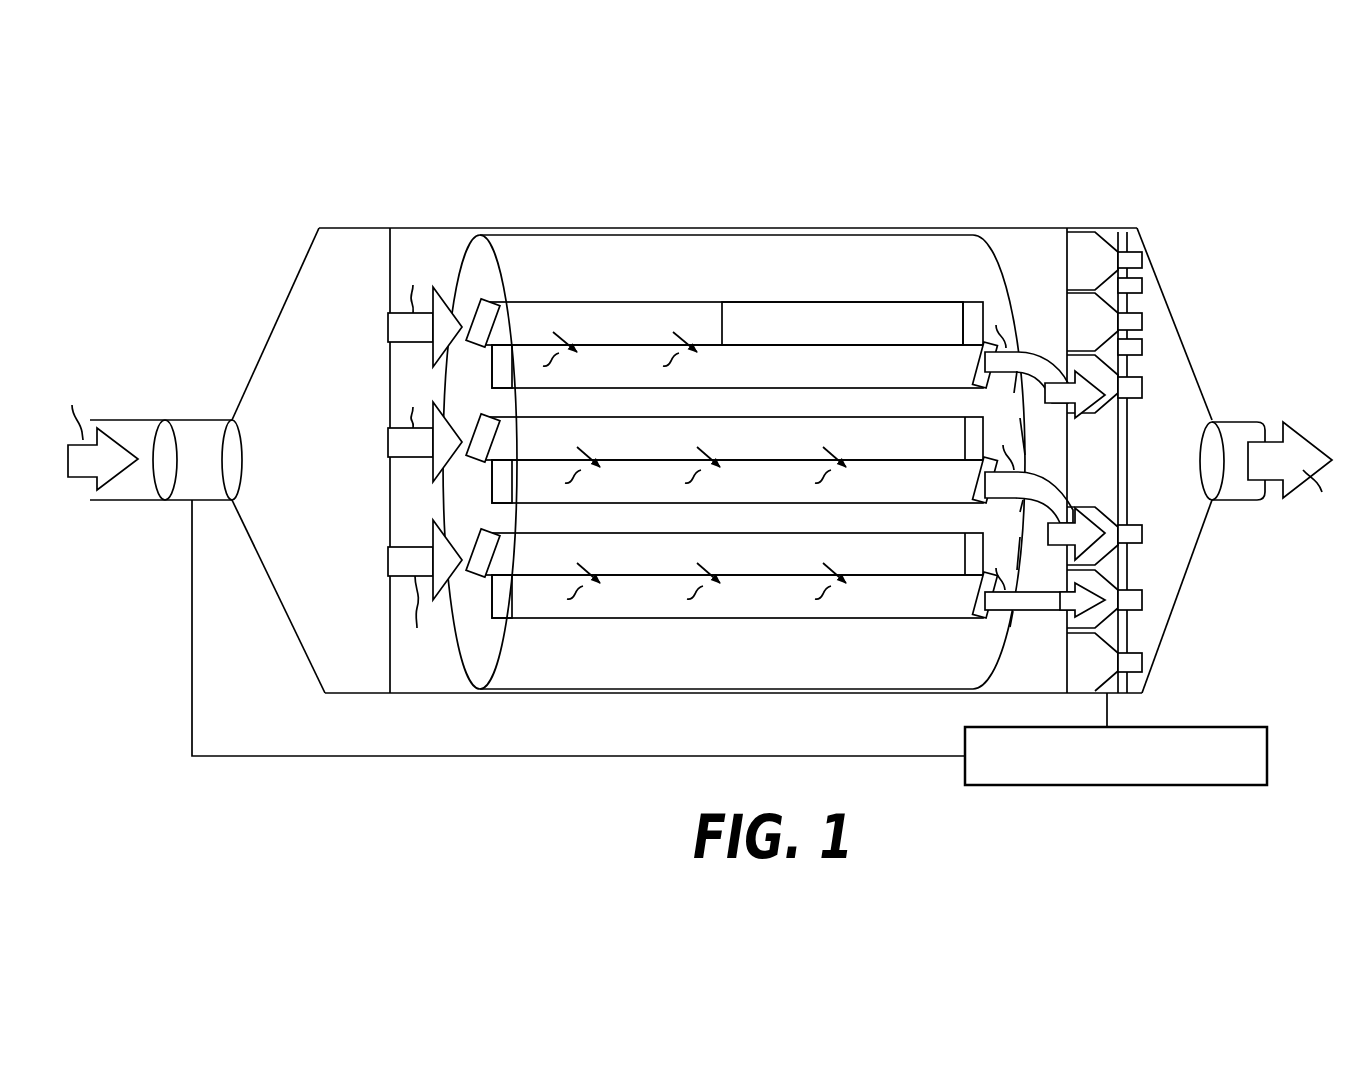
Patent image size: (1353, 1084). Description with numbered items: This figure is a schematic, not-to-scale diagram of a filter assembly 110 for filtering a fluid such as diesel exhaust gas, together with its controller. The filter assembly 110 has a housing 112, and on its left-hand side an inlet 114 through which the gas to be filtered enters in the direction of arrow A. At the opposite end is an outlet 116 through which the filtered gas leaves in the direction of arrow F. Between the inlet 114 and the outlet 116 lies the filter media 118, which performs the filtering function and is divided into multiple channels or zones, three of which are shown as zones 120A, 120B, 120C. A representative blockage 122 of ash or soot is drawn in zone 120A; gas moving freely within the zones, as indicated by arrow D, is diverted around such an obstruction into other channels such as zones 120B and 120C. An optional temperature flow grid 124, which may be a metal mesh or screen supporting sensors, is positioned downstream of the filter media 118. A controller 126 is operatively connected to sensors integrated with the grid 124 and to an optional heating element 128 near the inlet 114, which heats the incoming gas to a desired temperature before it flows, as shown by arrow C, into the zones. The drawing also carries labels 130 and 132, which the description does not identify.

The filter assembly 110 is at (867, 203).
The housing 112 is at (293, 318).
The inlet 114 is at (103, 503).
The outlet 116 is at (1246, 421).
The filter media 118 is at (600, 666).
The zone 120A is at (913, 376).
The zone 120B is at (913, 491).
The zone 120C is at (913, 607).
The blockage 122 is at (807, 300).
The temperature flow grid 124 is at (1127, 403).
The controller 126 is at (1130, 775).
The heating element 128 is at (215, 503).
The temperature flow grid cell / sensor 130 is at (1102, 229).
The outlet cone of housing 132 is at (1180, 338).